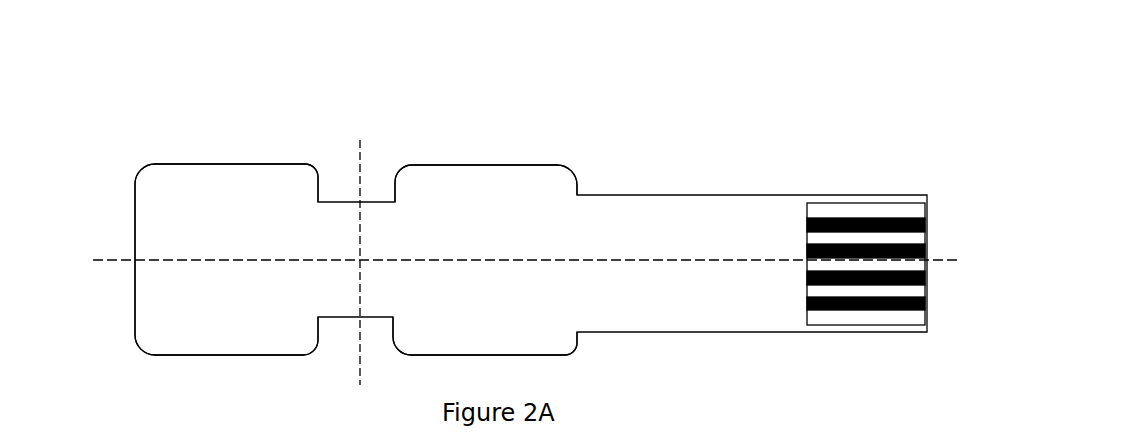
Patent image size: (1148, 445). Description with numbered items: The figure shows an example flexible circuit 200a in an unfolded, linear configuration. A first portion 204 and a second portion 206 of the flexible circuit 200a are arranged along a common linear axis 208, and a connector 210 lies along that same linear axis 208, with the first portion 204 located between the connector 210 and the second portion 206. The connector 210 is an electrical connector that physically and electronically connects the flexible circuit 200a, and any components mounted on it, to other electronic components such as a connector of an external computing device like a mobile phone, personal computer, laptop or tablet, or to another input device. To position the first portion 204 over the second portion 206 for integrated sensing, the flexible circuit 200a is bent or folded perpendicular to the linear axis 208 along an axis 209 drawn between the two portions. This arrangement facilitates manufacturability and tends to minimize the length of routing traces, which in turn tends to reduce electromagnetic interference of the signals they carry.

The flexible circuit 200a is at (150, 63).
The second portion 206 is at (188, 157).
The first portion 204 is at (540, 165).
The linear axis 208 is at (130, 262).
The axis 209 is at (365, 172).
The connector 210 is at (878, 217).